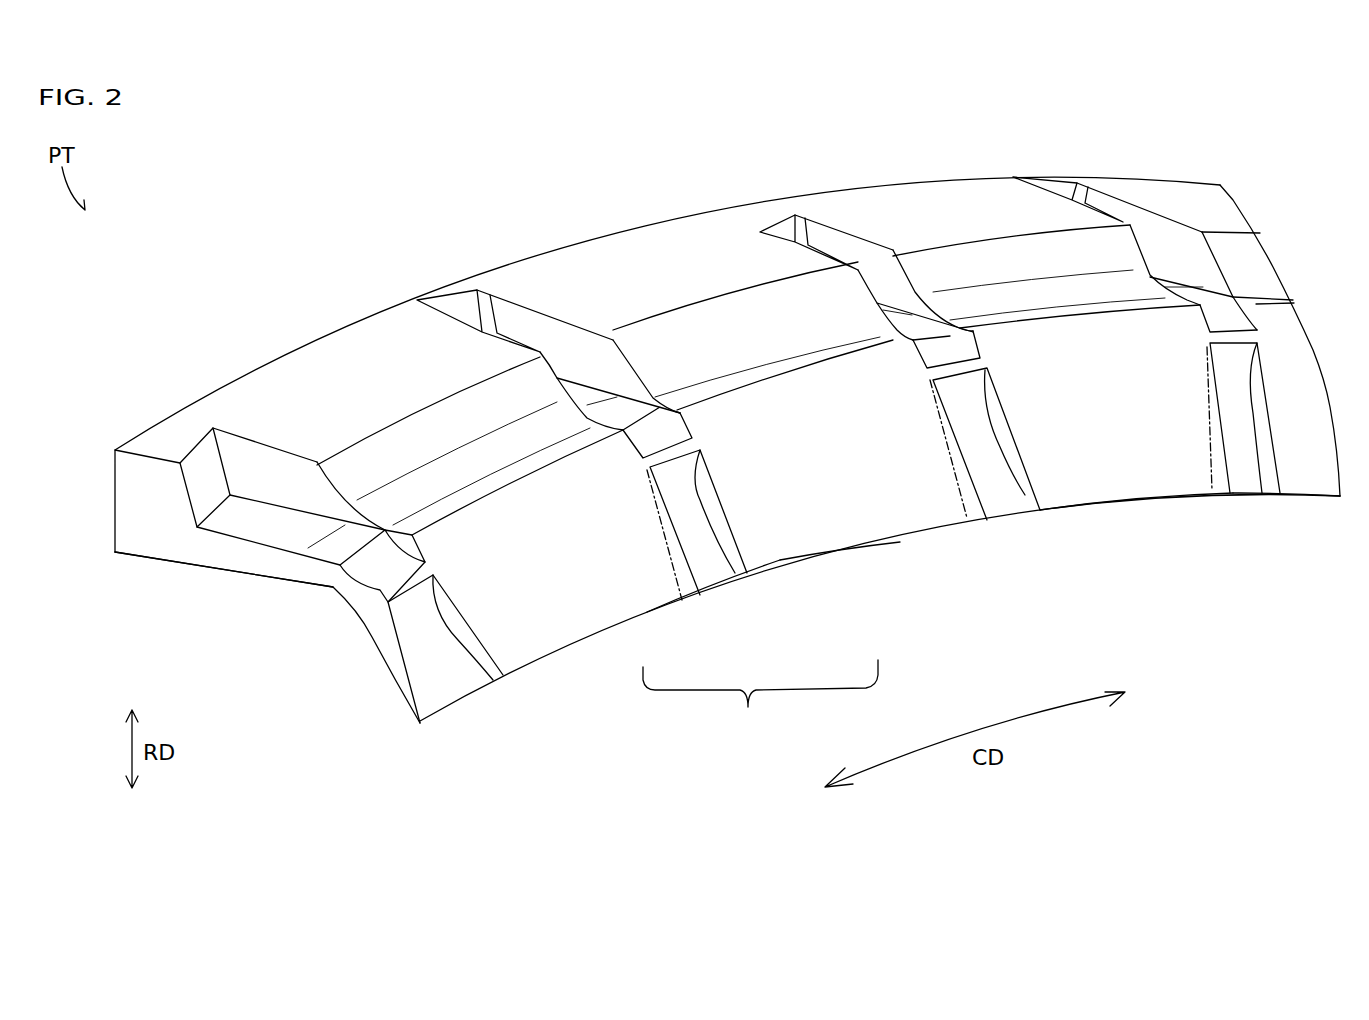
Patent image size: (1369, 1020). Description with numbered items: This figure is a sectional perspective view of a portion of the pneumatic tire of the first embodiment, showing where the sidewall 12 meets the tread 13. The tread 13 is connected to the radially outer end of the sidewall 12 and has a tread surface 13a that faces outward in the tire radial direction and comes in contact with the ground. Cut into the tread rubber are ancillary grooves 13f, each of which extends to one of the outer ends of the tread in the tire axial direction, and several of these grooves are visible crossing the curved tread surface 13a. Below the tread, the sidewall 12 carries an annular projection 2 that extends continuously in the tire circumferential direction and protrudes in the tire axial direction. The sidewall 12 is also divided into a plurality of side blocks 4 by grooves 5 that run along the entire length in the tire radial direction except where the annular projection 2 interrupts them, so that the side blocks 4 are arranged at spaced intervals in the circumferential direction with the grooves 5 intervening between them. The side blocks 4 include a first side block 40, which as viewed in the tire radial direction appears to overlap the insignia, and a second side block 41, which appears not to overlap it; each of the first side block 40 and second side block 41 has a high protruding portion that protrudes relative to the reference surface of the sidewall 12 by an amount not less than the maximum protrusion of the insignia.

The tread 13 is at (296, 300).
The tread surface 13a is at (350, 343).
The ancillary grooves 13f is at (252, 460).
The annular projection 2 is at (392, 587).
The grooves 5 is at (440, 643).
The sidewall 12 is at (379, 719).
The side blocks 4 is at (760, 703).
The first side block 40 is at (775, 565).
The second side block 41 is at (643, 605).